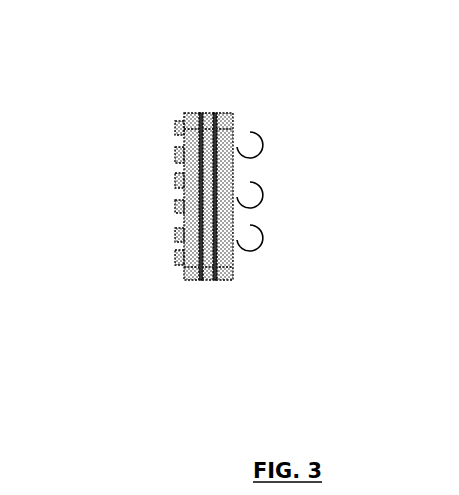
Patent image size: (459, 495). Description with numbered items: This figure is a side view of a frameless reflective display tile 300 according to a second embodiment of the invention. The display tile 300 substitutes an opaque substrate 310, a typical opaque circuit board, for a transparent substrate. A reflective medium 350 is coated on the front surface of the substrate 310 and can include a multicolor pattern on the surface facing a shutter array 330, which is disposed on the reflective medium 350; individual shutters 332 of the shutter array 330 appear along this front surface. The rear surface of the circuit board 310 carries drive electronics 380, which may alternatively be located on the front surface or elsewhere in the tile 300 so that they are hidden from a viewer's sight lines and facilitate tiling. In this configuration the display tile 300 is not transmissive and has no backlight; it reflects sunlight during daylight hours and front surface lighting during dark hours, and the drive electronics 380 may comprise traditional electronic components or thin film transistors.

The reflective display tile 300 is at (218, 214).
The opaque substrate 310 is at (195, 280).
The shutter array 330 is at (250, 260).
The coils 332 is at (263, 155).
The reflective medium 350 is at (223, 274).
The drive electronics 380 is at (185, 250).